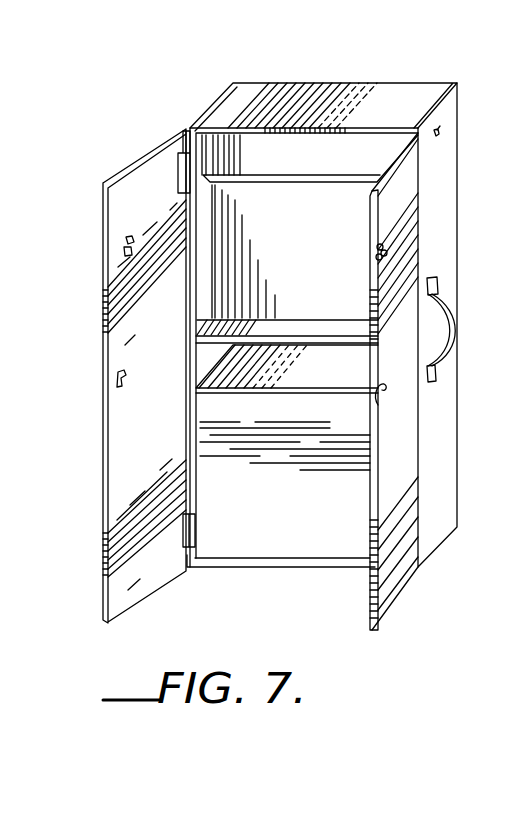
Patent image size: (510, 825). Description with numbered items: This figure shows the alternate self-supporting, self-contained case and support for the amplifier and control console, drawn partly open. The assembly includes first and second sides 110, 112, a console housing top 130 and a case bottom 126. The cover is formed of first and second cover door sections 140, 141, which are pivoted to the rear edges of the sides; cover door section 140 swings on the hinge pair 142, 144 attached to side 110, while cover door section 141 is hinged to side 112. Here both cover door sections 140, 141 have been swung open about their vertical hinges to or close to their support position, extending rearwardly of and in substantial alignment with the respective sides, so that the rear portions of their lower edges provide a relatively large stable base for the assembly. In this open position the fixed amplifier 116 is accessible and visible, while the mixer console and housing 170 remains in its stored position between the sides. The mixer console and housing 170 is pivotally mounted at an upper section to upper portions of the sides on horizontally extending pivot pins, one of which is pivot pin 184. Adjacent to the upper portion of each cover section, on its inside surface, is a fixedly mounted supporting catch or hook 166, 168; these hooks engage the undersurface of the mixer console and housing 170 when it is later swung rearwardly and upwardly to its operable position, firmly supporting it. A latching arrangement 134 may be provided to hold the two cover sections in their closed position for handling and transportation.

The first side 110 is at (207, 103).
The second side 112 is at (448, 156).
The fixed amplifier 116 is at (290, 507).
The case bottom 126 is at (260, 568).
The console housing top 130 is at (327, 93).
The latching arrangement 134 is at (380, 405).
The first cover door section 140 is at (133, 175).
The second cover door section 141 is at (393, 600).
The hinge 142 is at (179, 140).
The hinge 144 is at (192, 530).
The supporting catch or hook 166 is at (123, 252).
The supporting catch or hook 168 is at (388, 256).
The mixer console and housing 170 is at (312, 243).
The pivot pin 184 is at (438, 128).